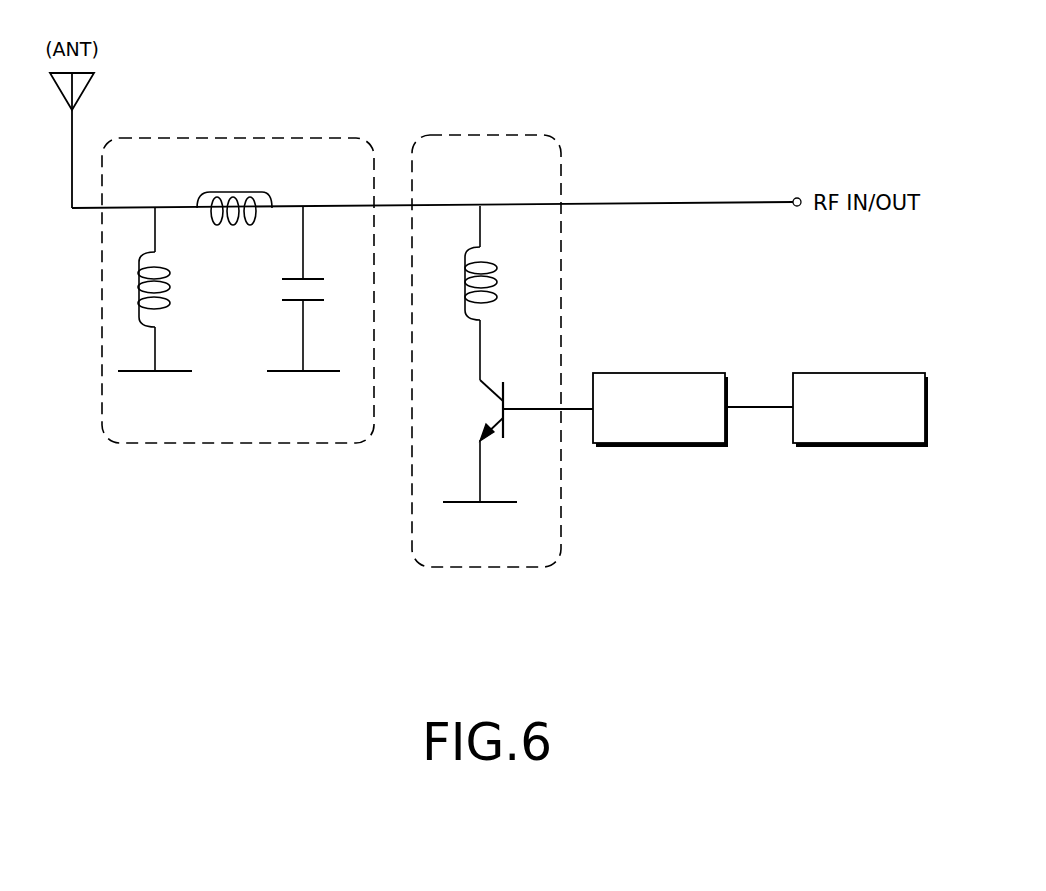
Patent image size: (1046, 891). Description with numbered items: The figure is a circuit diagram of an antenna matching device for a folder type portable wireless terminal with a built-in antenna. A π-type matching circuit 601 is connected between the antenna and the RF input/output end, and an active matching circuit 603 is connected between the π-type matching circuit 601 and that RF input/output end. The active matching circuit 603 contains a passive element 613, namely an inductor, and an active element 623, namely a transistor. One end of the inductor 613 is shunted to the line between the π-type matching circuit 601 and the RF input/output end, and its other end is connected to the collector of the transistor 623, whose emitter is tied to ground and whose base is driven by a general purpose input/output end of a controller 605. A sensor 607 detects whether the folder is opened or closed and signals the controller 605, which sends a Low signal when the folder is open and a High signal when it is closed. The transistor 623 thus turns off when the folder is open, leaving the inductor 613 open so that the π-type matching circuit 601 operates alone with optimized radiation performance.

The π-type matching circuit 601 is at (272, 137).
The active matching circuit 603 is at (489, 325).
The controller 605 is at (693, 372).
The sensor 607 is at (894, 372).
The passive element (inductor L3) 613 is at (522, 296).
The active element (transistor) 623 is at (506, 433).